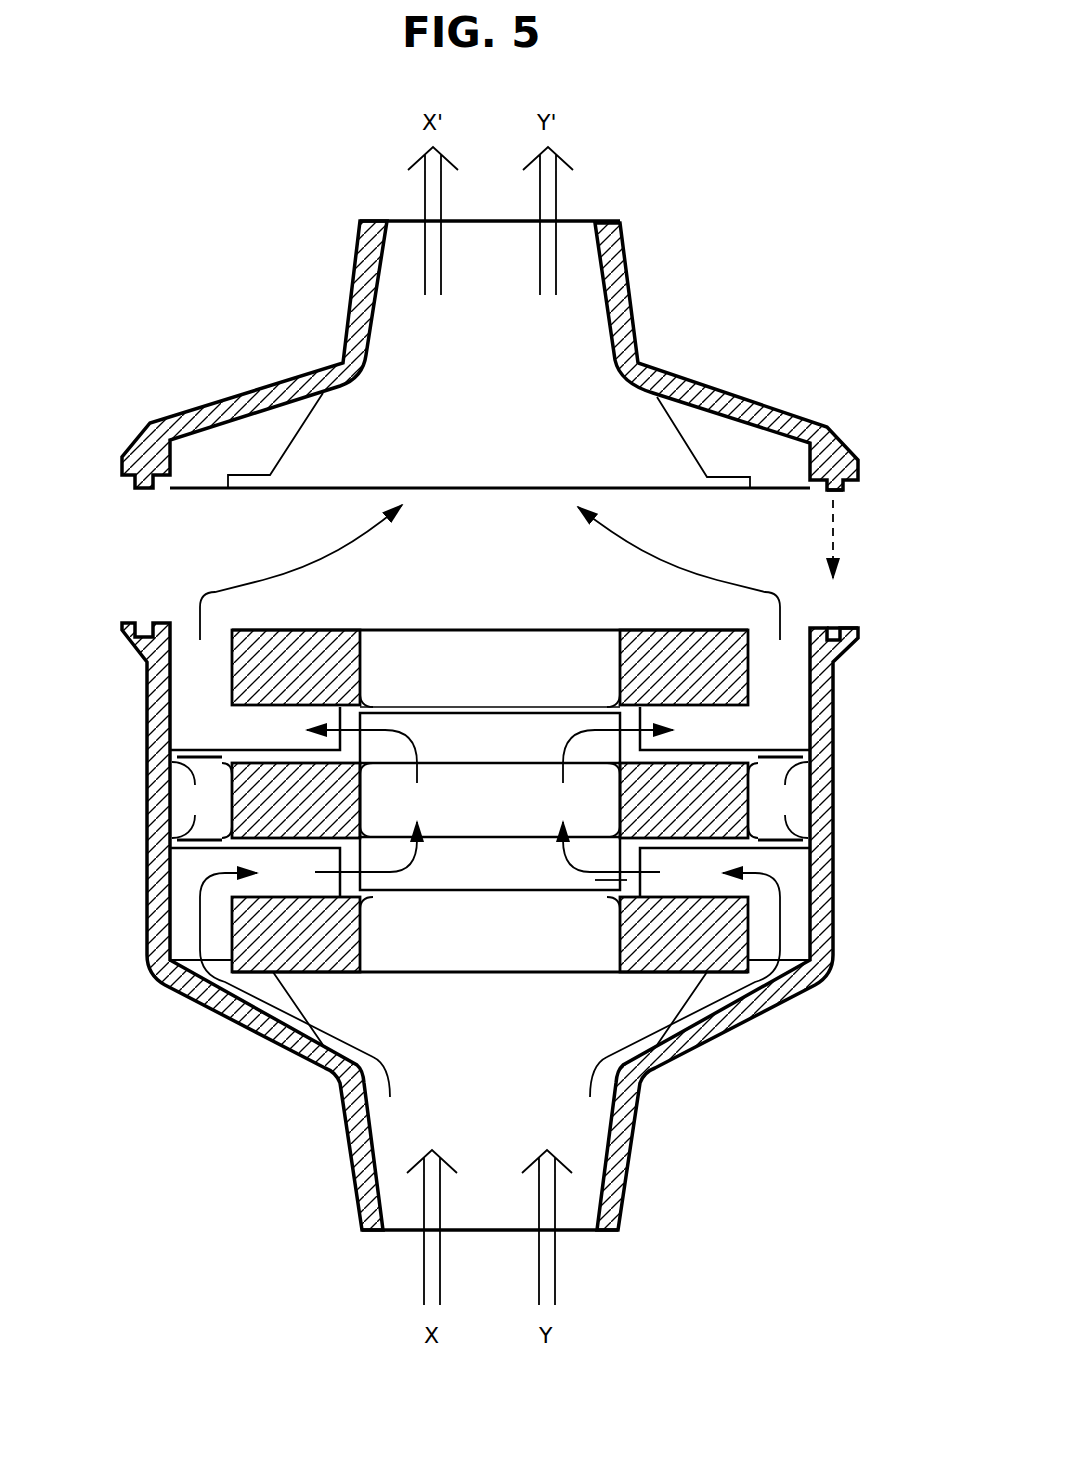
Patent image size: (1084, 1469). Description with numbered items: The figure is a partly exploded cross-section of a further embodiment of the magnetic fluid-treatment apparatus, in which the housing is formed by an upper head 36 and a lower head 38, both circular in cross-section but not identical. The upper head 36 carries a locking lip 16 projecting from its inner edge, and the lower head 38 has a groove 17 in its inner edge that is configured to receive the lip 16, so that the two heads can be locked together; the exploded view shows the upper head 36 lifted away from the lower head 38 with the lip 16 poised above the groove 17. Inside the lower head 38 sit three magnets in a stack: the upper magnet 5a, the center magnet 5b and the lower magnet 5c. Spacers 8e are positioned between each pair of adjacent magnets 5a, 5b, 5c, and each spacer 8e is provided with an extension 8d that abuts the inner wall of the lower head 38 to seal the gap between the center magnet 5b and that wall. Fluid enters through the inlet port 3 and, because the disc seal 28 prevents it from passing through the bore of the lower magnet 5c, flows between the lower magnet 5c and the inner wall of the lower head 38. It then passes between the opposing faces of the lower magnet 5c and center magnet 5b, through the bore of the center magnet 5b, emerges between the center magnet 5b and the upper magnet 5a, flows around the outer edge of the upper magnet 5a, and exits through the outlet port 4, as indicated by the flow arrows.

The inlet port 3 is at (403, 1232).
The outlet port 4 is at (490, 329).
The upper magnet 5a is at (327, 670).
The center magnet 5b is at (185, 850).
The lower magnet 5c is at (327, 945).
The extension 8d is at (193, 830).
The spacer 8e is at (600, 880).
The locking lip 16 is at (858, 488).
The groove 17 is at (838, 628).
The disc seal 28 is at (515, 707).
The upper head 36 is at (255, 405).
The lower head 38 is at (526, 947).